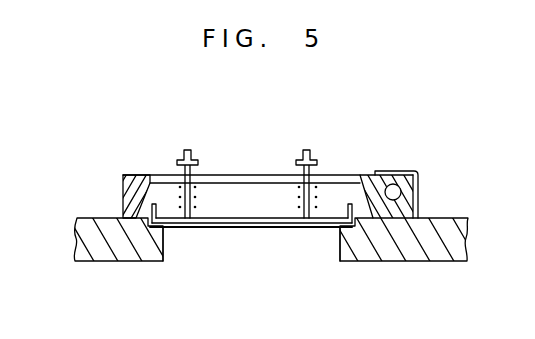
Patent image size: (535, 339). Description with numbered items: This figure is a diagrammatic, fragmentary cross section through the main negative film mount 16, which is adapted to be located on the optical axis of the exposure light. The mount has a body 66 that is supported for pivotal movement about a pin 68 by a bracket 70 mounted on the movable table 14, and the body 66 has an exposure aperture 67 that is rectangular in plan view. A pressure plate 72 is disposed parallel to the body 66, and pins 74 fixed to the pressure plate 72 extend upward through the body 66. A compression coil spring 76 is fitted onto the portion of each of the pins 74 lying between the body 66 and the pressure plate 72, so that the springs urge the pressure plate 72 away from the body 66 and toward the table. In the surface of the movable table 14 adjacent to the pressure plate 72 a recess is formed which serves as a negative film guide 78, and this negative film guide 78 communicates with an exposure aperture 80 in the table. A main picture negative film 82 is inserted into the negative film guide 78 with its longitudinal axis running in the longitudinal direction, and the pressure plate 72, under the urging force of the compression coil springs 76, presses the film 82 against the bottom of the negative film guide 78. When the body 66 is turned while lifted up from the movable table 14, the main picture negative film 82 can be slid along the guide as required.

The movable table 14 is at (93, 217).
The main negative film mount 16 is at (426, 133).
The body 66 is at (142, 174).
The exposure aperture 67 is at (171, 174).
The pin 68 is at (402, 171).
The bracket 70 is at (385, 174).
The pressure plate 72 is at (226, 217).
The pins 74 is at (186, 150).
The compression coil spring 76 is at (198, 193).
The negative film guide 78 is at (168, 228).
The exposure aperture 80 is at (167, 261).
The main picture negative film 82 is at (267, 228).